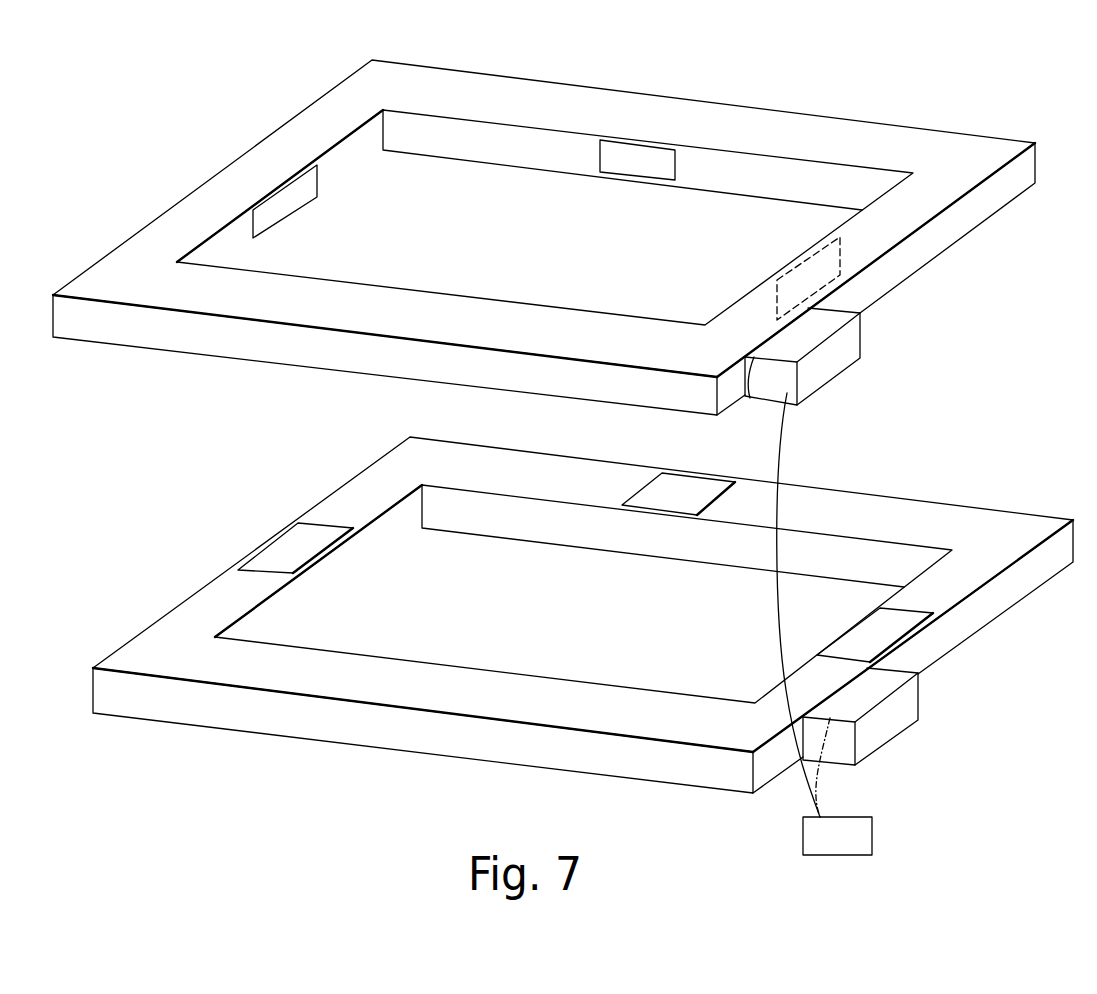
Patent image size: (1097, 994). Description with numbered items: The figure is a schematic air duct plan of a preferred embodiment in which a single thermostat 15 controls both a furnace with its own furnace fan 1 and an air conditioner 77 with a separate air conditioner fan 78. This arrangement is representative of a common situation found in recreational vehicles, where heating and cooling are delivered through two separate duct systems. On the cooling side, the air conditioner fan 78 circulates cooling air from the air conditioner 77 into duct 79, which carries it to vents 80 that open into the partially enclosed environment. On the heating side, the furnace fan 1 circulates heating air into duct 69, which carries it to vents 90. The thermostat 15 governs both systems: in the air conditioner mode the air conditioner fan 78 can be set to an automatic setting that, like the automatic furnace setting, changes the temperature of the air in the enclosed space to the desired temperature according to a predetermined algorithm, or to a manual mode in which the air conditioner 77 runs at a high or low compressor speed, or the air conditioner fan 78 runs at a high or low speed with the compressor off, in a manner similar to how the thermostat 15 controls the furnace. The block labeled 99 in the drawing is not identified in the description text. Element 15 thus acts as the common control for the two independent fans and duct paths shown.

The furnace fan 1 is at (880, 667).
The thermostat 15 is at (867, 843).
The duct 69 is at (423, 703).
The air conditioner 77 is at (820, 348).
The air conditioner fan 78 is at (752, 400).
The duct 79 is at (940, 198).
The vents 80 is at (298, 198).
The vents 90 is at (237, 558).
The connector block 99 is at (878, 698).